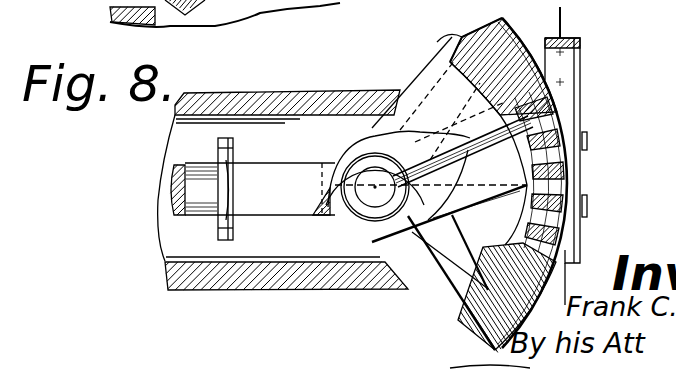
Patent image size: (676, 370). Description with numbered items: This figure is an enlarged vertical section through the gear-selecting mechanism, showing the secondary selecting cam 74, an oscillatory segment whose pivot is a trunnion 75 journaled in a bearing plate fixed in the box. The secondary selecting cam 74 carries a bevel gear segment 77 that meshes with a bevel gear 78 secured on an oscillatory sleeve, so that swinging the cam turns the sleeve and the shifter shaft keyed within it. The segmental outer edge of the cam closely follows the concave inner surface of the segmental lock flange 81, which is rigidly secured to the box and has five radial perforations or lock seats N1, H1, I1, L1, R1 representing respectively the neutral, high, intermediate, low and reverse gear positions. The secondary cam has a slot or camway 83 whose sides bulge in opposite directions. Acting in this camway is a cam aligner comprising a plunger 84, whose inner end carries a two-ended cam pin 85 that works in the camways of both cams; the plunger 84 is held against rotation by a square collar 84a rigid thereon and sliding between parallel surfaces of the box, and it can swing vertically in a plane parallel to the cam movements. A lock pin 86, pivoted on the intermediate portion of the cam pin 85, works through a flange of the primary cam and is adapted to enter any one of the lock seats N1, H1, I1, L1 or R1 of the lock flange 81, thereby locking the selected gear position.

The secondary selecting cam 74 is at (392, 226).
The trunnion 75 is at (472, 108).
The bevel gear segment 77 is at (457, 36).
The bevel gear 78 is at (567, 38).
The lock flange 81 is at (527, 80).
The camway 83 is at (467, 158).
The plunger 84 is at (265, 172).
The square collar 84a is at (234, 236).
The cam pin 85 is at (367, 175).
The lock pin 86 is at (436, 163).
The lock seat N1 is at (560, 115).
The lock seat H1 is at (583, 147).
The lock seat I1 is at (585, 182).
The lock seat L1 is at (583, 217).
The lock seat R1 is at (583, 253).